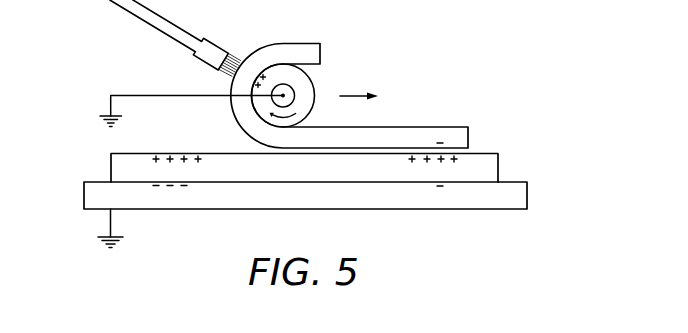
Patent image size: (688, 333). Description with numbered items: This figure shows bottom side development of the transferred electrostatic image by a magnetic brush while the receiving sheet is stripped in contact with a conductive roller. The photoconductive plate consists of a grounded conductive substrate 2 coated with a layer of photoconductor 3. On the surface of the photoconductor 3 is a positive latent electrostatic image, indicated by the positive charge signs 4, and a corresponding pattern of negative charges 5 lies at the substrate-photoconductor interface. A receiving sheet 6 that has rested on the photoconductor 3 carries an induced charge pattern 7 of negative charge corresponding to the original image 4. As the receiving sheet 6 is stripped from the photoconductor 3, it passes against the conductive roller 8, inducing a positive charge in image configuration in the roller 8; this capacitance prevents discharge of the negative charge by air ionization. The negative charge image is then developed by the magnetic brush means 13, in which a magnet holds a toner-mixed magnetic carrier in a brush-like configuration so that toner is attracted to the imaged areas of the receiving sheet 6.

The grounded conductive substrate 2 is at (332, 210).
The photoconductor 3 is at (482, 153).
The positive charge image 4 is at (205, 143).
The negative charges 5 is at (197, 185).
The receiving sheet 6 is at (372, 127).
The induced charge pattern 7 is at (243, 66).
The conductive roller 8 is at (312, 74).
The magnetic brush means 13 is at (177, 26).